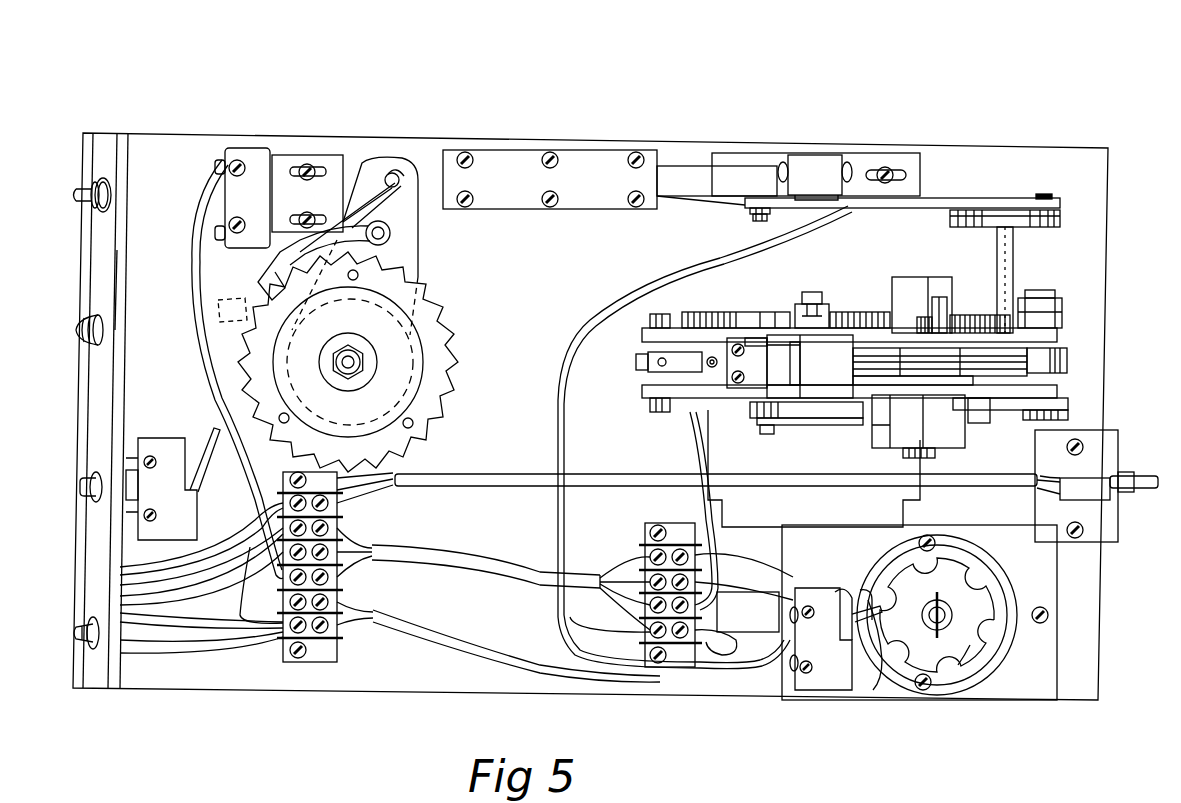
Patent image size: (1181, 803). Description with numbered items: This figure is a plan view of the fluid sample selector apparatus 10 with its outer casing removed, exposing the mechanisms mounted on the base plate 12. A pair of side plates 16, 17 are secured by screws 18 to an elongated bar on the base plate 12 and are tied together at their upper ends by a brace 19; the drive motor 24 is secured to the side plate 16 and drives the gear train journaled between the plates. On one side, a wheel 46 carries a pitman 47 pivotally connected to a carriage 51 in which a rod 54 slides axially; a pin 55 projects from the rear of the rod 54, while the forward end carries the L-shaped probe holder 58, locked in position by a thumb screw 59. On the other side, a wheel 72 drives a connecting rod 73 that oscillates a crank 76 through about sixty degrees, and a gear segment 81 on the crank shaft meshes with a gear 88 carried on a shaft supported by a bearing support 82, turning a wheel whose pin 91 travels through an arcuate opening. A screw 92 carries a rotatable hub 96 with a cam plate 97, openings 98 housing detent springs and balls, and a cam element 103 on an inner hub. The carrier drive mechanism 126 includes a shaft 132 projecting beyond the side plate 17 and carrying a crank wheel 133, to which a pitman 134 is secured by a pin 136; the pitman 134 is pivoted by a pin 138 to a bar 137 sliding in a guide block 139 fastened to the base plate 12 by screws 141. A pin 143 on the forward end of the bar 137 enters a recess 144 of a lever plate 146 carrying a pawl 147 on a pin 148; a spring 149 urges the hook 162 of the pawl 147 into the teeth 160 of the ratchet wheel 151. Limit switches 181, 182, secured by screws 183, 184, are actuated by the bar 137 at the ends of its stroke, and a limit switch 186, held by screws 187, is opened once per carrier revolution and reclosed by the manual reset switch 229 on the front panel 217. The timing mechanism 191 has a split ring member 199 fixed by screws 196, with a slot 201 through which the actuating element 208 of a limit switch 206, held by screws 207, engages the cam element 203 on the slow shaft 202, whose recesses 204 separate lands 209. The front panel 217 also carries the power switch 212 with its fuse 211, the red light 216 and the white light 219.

The fluid sample selector apparatus 10 is at (1015, 80).
The base plate 12 is at (393, 688).
The side plate 16 is at (1062, 405).
The side plate 17 is at (1062, 342).
The screws 18 is at (660, 414).
The brace 19 is at (838, 350).
The drive motor 24 is at (814, 521).
The wheel 46 is at (870, 316).
The pitman 47 is at (800, 305).
The carriage 51 is at (757, 350).
The rod 54 is at (723, 360).
The pin 55 is at (985, 410).
The L-shaped probe holder 58 is at (656, 372).
The thumb screw 59 is at (710, 370).
The wheel 72 is at (752, 420).
The connecting rod 73 is at (800, 428).
The crank 76 is at (1047, 416).
The gear segment 81 is at (989, 318).
The bearing support 82 is at (915, 282).
The gear 88 is at (947, 312).
The pin 91 is at (857, 412).
The screw 92 is at (910, 458).
The hub 96 is at (897, 410).
The cam plate 97 is at (948, 400).
The openings 98 is at (1062, 378).
The cam element 103 is at (922, 382).
The carrier drive mechanism 126 is at (408, 88).
The shaft 132 is at (1013, 272).
The crank wheel 133 is at (1040, 226).
The pitman 134 is at (975, 199).
The pin 136 is at (1054, 180).
The bar 137 is at (682, 162).
The pin 138 is at (758, 221).
The guide block 139 is at (527, 150).
The screws 141 is at (468, 152).
The pin 143 is at (393, 172).
The recess 144 is at (398, 165).
The lever plate 146 is at (421, 256).
The pawl 147 is at (300, 240).
The pin 148 is at (392, 230).
The spring 149 is at (356, 222).
The ratchet wheel 151 is at (456, 312).
The teeth 160 is at (258, 292).
The hook 162 is at (305, 298).
The limit switch 181 is at (813, 155).
The limit switch 182 is at (250, 148).
The screws 183 is at (887, 167).
The screws 184 is at (305, 165).
The limit switch 186 is at (160, 440).
The screws 187 is at (187, 440).
The timing mechanism 191 is at (949, 708).
The screws 196 is at (920, 543).
The split ring member 199 is at (995, 580).
The slot 201 is at (853, 592).
The shaft 202 is at (941, 615).
The cam element 203 is at (980, 640).
The recesses 204 is at (958, 665).
The limit switch 206 is at (806, 590).
The screws 207 is at (811, 615).
The actuating element 208 is at (870, 582).
The lands 209 is at (878, 652).
The fuse 211 is at (1106, 500).
The switch 212 is at (76, 195).
The red light 216 is at (70, 633).
The front panel 217 is at (104, 305).
The white light 219 is at (75, 330).
The manual reset switch 229 is at (80, 487).